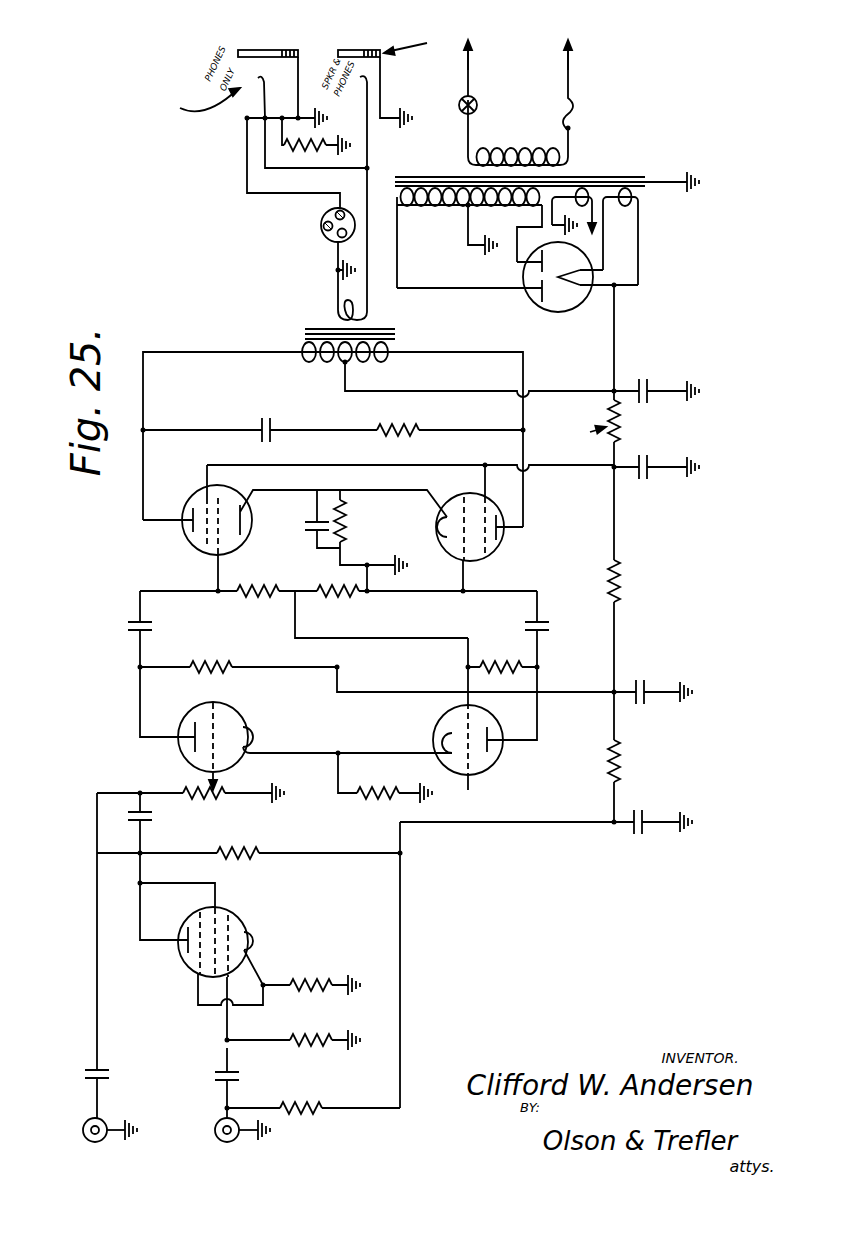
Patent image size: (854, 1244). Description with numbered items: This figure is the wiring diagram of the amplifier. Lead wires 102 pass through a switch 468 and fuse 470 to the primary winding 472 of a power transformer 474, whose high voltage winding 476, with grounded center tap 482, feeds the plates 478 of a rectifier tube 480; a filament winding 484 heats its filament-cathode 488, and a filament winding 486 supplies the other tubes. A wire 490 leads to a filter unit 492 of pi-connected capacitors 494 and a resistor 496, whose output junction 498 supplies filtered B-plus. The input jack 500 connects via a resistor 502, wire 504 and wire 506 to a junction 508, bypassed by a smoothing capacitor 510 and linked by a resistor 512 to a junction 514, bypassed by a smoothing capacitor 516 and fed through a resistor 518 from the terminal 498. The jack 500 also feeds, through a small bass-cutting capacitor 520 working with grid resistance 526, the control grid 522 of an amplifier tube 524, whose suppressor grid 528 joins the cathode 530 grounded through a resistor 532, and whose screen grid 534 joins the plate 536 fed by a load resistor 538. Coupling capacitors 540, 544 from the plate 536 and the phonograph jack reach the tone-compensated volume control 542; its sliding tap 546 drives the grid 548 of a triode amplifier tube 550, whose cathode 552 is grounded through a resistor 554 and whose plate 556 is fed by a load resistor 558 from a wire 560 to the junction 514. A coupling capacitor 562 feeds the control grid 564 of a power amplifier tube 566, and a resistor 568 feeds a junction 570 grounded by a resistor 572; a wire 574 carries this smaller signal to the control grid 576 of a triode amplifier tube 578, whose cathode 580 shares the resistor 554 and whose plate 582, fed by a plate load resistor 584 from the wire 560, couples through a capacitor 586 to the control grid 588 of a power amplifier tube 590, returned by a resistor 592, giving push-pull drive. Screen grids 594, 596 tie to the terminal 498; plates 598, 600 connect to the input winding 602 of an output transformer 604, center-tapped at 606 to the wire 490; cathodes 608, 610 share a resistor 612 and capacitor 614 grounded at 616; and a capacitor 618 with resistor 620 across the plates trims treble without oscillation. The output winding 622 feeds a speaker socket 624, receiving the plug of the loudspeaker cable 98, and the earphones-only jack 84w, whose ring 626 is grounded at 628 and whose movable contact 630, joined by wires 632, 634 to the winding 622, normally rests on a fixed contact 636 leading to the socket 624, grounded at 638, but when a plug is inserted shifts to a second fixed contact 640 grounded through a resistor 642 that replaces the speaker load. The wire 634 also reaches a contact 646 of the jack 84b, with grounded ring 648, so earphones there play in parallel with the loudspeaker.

The power plug 84b is at (420, 33).
The switch 84w is at (225, 120).
The phono jack 98 is at (88, 1122).
The power terminals 102 is at (566, 66).
The pilot lamp 468 is at (459, 99).
The fuse 470 is at (575, 115).
The primary winding 472 is at (512, 150).
The power transformer 474 is at (457, 163).
The high voltage secondary winding 476 is at (426, 210).
The rectifier plates 478 is at (538, 287).
The rectifier tube 480 is at (555, 312).
The center tap 482 is at (468, 212).
The filament winding 484 is at (638, 205).
The heater winding 486 is at (592, 205).
The rectifier filament 488 is at (572, 285).
The B plus lead 490 is at (616, 348).
The filter resistor 492 is at (585, 429).
The filter capacitors 494 is at (648, 462).
The filter lead 496 is at (610, 450).
The supply lead 498 is at (617, 472).
The input jack 500 is at (220, 1118).
The resistor 502 is at (312, 1112).
The lead 504 is at (402, 912).
The lead 506 is at (518, 824).
The lead 508 is at (612, 826).
The capacitor 510 is at (640, 835).
The resistor 512 is at (604, 752).
The junction 514 is at (617, 697).
The capacitor 516 is at (642, 680).
The resistor 518 is at (606, 580).
The coupling capacitor 520 is at (218, 1075).
The control grid 522 is at (236, 928).
The amplifier tube 524 is at (183, 962).
The grid resistor 526 is at (292, 1045).
The screen grid 528 is at (198, 925).
The cathode 530 is at (250, 942).
The cathode resistor 532 is at (300, 980).
The suppressor grid 534 is at (217, 920).
The cathode lead 536 is at (185, 948).
The resistor 538 is at (255, 850).
The capacitor 540 is at (130, 815).
The lead 542 is at (178, 791).
The phono coupling capacitor 544 is at (88, 1074).
The volume control 546 is at (205, 790).
The amplifier tube 548 is at (200, 725).
The control grid 550 is at (215, 710).
The plate 552 is at (250, 735).
The resistor 554 is at (368, 805).
The cathode 556 is at (188, 722).
The resistor 558 is at (212, 660).
The lead 560 is at (345, 692).
The capacitor 562 is at (130, 627).
The lead 564 is at (213, 545).
The grid 566 is at (200, 505).
The resistor 568 is at (255, 600).
The lead 570 is at (338, 560).
The lead 572 is at (297, 595).
The lead 574 is at (447, 628).
The control grid 576 is at (455, 730).
The lead 578 is at (483, 775).
The phase inverter tube 580 is at (432, 722).
The plate 582 is at (492, 748).
The resistor 584 is at (506, 660).
The capacitor 586 is at (548, 625).
The cathode lead 588 is at (460, 545).
The control grid 590 is at (463, 500).
The resistor 592 is at (387, 593).
The screen grid 594 is at (205, 492).
The screen grid 596 is at (483, 500).
The output tube 598 is at (182, 530).
The output tube 600 is at (500, 522).
The lead 602 is at (308, 358).
The output transformer 604 is at (306, 313).
The center tap 606 is at (343, 364).
The plate lead 608 is at (252, 505).
The lead 610 is at (433, 497).
The resistor 612 is at (345, 520).
The capacitor 614 is at (310, 526).
The ground lead 616 is at (368, 560).
The capacitor 618 is at (262, 422).
The resistor 620 is at (380, 425).
The secondary winding 622 is at (375, 310).
The speaker socket 624 is at (321, 222).
The switch contact 626 is at (250, 50).
The lead 628 is at (300, 112).
The switch blade 630 is at (258, 78).
The lead 632 is at (275, 170).
The lead 634 is at (368, 232).
The junction 636 is at (262, 112).
The ground connection 638 is at (330, 262).
The switch contact 640 is at (279, 91).
The lead 642 is at (250, 175).
The resistor 646 is at (320, 140).
The lead 648 is at (380, 62).